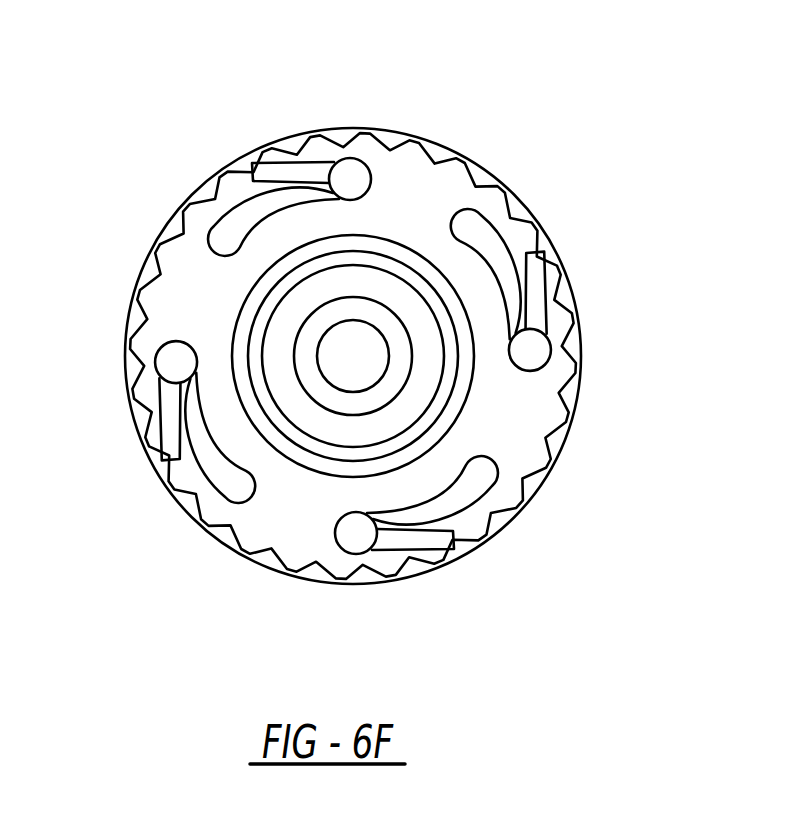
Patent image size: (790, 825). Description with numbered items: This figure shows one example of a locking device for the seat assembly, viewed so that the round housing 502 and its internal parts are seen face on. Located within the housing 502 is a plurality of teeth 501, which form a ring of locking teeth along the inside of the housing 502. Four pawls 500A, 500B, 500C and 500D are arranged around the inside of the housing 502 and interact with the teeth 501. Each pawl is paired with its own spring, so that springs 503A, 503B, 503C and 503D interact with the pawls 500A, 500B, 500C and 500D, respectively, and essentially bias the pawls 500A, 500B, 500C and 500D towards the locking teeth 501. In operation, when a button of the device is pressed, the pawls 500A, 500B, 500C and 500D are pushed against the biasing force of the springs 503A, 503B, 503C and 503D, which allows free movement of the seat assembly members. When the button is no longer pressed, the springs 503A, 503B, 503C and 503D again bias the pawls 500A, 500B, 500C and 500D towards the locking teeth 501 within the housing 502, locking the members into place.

The pawl 500A is at (306, 170).
The pawl 500B is at (537, 302).
The pawl 500C is at (435, 540).
The pawl 500D is at (167, 413).
The teeth 501 is at (553, 450).
The housing 502 is at (493, 173).
The spring 503A is at (220, 212).
The spring 503B is at (502, 227).
The spring 503C is at (497, 495).
The spring 503D is at (205, 493).